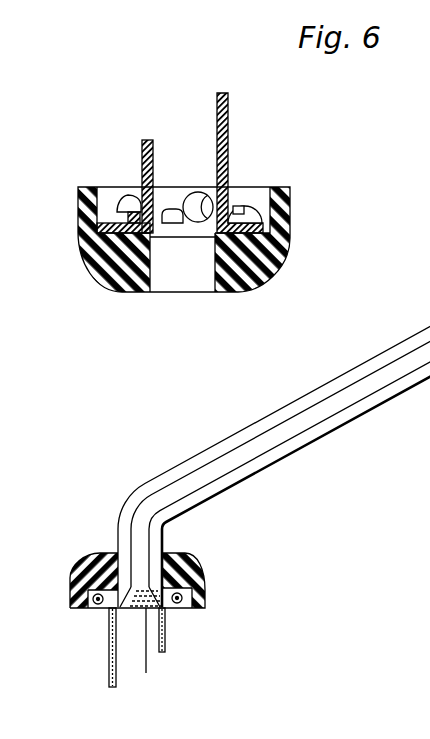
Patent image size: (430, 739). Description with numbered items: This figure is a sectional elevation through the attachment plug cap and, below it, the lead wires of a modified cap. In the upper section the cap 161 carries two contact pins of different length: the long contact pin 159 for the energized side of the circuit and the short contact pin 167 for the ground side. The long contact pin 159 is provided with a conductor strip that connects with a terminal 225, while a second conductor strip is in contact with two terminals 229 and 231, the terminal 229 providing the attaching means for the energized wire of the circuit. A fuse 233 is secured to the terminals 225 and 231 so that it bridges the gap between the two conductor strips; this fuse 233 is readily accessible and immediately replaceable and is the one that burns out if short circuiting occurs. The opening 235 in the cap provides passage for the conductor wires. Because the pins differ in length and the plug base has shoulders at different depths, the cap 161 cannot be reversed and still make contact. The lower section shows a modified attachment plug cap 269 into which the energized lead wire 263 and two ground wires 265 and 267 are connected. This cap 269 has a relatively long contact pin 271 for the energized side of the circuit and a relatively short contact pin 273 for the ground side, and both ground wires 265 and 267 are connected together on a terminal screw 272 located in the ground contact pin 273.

The long contact pin 159 is at (229, 104).
The cap 161 is at (276, 269).
The contact pin 167 is at (142, 156).
The terminal 225 is at (250, 204).
The terminal 229 is at (129, 200).
The terminal 231 is at (173, 208).
The fuse 233 is at (203, 194).
The opening 235 is at (179, 277).
The energized lead wire 263 is at (243, 440).
The ground wire 265 is at (214, 474).
The ground wire 267 is at (273, 459).
The attachment plug cap 269 is at (190, 565).
The contact pin 271 is at (110, 638).
The terminal screw 272 is at (169, 651).
The contact pin 273 is at (166, 628).